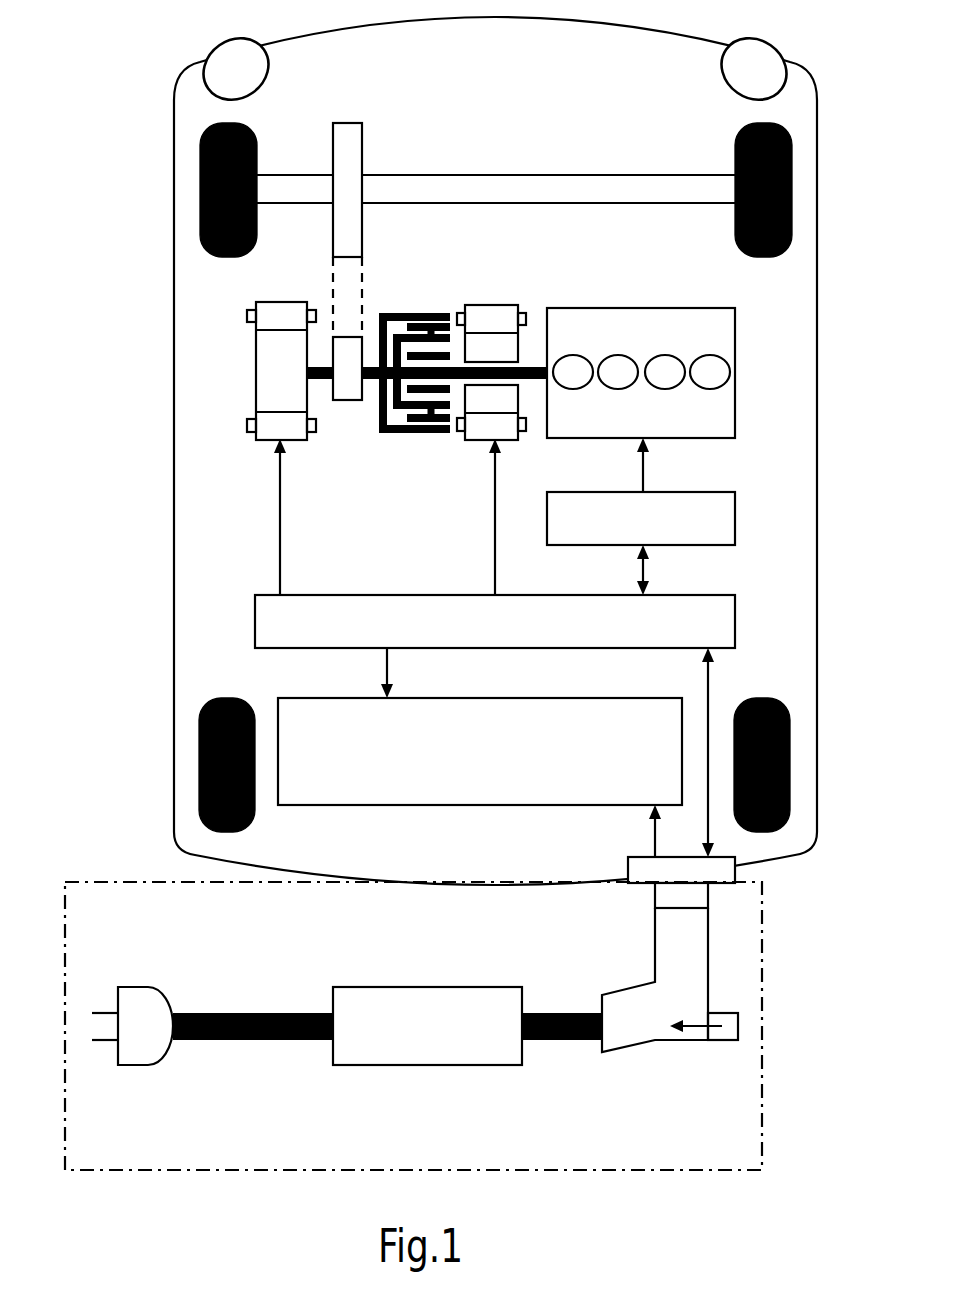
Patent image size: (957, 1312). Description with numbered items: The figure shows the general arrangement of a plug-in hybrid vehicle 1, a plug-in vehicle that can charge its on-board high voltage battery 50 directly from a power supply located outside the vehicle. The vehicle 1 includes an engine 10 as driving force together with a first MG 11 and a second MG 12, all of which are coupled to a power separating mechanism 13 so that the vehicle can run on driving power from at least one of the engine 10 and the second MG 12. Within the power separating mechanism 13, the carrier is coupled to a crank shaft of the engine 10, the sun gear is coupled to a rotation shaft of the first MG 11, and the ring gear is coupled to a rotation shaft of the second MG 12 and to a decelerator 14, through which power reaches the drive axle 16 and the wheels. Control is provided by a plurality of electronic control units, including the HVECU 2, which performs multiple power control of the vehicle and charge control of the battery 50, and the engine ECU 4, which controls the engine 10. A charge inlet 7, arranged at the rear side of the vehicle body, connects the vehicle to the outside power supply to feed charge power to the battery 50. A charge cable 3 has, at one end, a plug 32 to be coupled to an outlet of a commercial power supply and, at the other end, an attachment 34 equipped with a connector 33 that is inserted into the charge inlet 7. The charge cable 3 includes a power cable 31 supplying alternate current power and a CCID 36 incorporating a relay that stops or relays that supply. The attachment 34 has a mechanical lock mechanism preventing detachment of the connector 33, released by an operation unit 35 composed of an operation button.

The plug-in hybrid vehicle 1 is at (817, 203).
The HVECU 2 is at (340, 595).
The charge cable 3 is at (762, 1011).
The engine ECU 4 is at (735, 522).
The charge inlet 7 is at (628, 870).
The engine 10 is at (735, 367).
The first MG 11 is at (500, 305).
The second MG 12 is at (270, 302).
The power separating mechanism 13 is at (405, 313).
The decelerator 14 is at (362, 123).
The drive shaft / axle 16 is at (527, 175).
The power cable 31 is at (246, 1040).
The plug 32 is at (138, 1065).
The connector 33 is at (655, 890).
The attachment 34 is at (655, 935).
The operation unit 35 is at (720, 1040).
The CCID 36 is at (420, 1065).
The battery 50 is at (488, 805).